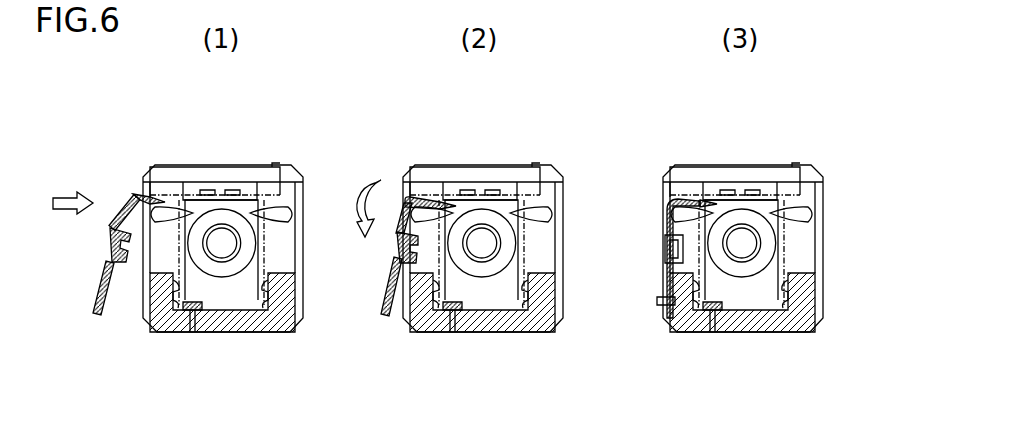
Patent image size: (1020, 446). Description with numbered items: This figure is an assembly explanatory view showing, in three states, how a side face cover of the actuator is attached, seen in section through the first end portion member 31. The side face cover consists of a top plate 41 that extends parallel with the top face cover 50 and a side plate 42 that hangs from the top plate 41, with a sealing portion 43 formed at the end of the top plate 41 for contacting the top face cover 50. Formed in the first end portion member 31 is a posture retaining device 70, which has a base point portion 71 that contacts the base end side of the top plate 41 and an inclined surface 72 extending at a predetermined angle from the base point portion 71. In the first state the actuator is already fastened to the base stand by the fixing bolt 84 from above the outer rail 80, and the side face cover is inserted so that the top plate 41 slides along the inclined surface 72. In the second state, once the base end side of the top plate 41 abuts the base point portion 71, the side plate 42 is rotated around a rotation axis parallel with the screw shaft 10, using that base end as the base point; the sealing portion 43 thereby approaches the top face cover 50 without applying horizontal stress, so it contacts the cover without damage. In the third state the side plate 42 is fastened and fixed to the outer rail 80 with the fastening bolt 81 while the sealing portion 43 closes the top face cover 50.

The screw shaft 10 is at (225, 244).
The first end portion member 31 is at (282, 256).
The top plate 41 is at (137, 197).
The side plate 42 is at (100, 288).
The sealing portion 43 is at (712, 208).
The top face cover 50 is at (248, 192).
The posture retaining device 70 is at (690, 213).
The base point portion 71 is at (160, 212).
The inclined surface 72 is at (186, 212).
The outer rail 80 is at (222, 322).
The fastening bolt 81 is at (658, 305).
The fixing bolt 84 is at (192, 332).